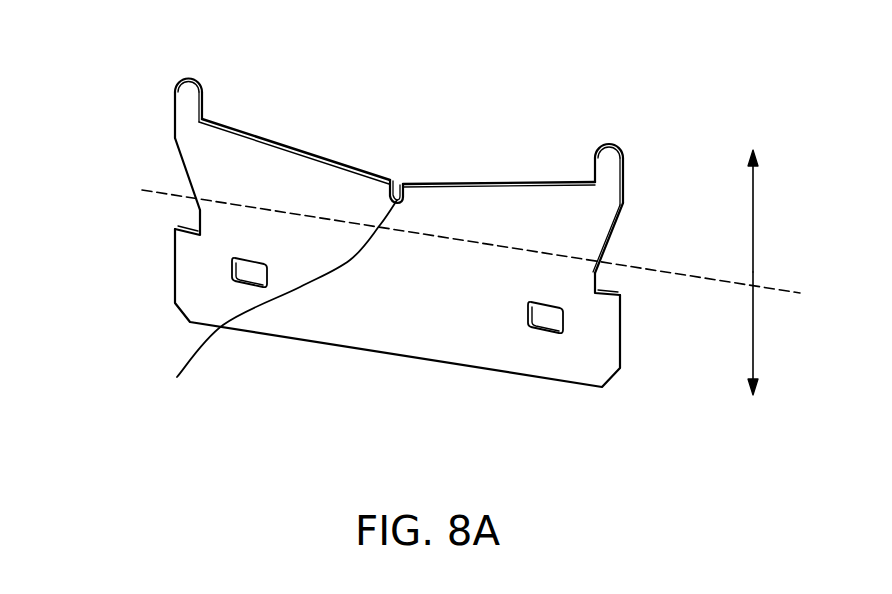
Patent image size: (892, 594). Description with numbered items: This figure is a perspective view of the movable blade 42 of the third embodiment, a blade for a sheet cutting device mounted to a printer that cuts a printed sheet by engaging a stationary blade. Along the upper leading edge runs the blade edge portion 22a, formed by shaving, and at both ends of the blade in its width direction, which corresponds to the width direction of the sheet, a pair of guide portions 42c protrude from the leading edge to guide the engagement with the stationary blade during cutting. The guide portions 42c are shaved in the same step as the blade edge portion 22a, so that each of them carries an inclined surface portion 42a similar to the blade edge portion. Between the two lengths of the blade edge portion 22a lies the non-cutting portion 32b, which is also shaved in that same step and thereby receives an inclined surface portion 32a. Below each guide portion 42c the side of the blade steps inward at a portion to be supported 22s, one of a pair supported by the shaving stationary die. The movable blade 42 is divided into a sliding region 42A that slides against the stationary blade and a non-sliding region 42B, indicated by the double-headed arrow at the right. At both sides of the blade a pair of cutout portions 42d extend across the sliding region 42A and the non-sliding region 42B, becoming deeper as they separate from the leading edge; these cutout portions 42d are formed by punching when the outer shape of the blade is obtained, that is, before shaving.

The movable blade 42 is at (399, 230).
The inclined surface portion 42a is at (189, 77).
The guide portion 42c is at (175, 92).
The cutout portion 42d is at (183, 162).
The blade edge portion 22a is at (298, 143).
The portion to be supported 22s is at (175, 228).
The inclined surface portion 32a is at (278, 309).
The non-cutting portion 32b is at (400, 184).
The sliding region 42A is at (779, 211).
The non-sliding region 42B is at (779, 333).